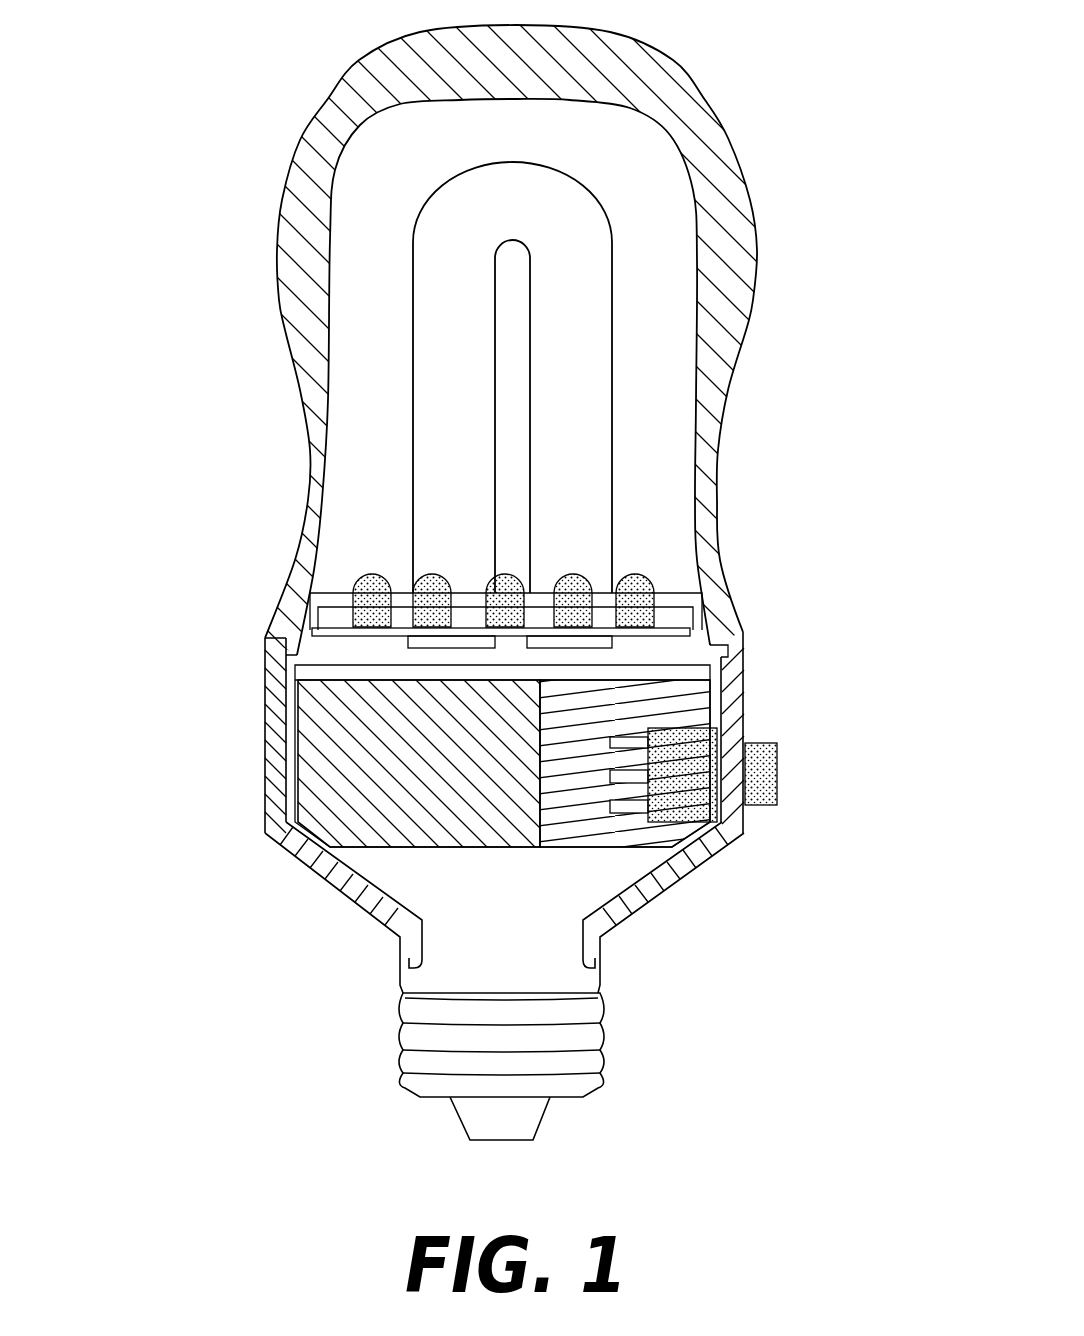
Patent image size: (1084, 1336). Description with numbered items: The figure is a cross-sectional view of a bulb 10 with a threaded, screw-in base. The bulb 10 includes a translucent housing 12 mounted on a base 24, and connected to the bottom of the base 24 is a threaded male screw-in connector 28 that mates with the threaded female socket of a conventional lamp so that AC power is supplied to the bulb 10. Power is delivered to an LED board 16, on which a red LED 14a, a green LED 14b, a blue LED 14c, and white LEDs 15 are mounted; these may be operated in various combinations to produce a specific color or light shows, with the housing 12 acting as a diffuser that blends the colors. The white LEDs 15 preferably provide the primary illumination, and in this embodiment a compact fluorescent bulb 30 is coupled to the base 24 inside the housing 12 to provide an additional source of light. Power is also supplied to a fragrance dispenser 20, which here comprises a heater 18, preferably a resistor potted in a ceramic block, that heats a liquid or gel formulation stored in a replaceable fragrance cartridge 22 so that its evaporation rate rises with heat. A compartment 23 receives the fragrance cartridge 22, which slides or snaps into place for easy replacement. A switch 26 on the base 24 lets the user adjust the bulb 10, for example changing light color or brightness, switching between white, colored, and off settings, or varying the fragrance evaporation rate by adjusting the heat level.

The bulb 10 is at (170, 355).
The translucent housing 12 is at (728, 138).
The red LED 14a is at (432, 575).
The green LED 14b is at (503, 575).
The blue LED 14c is at (573, 575).
The white LED 15 is at (372, 575).
The LED board 16 is at (680, 621).
The heater 18 is at (602, 850).
The fragrance dispenser 20 is at (248, 800).
The fragrance cartridge 22 is at (333, 730).
The compartment 23 is at (343, 651).
The base 24 is at (302, 868).
The switch 26 is at (760, 760).
The screw-in connector 28 is at (403, 1007).
The compact fluorescent bulb 30 is at (535, 222).